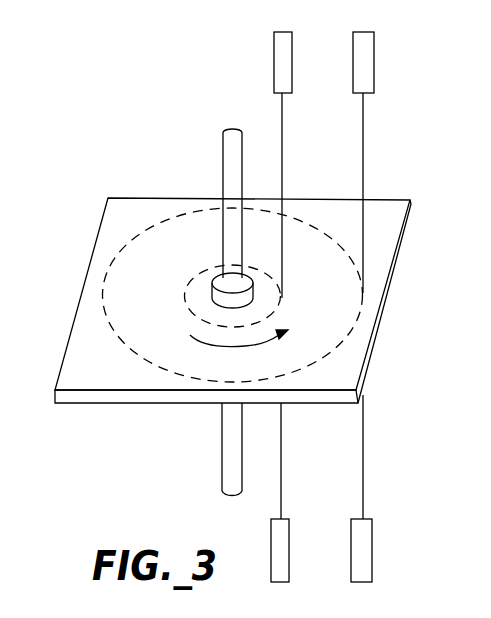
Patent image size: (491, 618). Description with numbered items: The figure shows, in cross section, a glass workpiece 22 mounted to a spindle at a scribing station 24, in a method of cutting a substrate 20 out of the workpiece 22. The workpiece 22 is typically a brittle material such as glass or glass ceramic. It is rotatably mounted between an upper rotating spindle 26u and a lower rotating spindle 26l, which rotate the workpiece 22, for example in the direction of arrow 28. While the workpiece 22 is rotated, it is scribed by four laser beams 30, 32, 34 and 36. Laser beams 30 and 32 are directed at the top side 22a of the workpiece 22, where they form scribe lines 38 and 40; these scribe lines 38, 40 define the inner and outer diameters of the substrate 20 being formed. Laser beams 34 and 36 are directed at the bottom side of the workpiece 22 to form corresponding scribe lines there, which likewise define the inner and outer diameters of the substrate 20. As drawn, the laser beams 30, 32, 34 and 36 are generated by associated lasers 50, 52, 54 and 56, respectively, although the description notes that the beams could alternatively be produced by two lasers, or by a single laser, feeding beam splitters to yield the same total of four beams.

The substrate 20 is at (142, 310).
The workpiece 22 is at (397, 222).
The top side 22a is at (365, 337).
The scribing station 24 is at (157, 68).
The upper rotating spindle 26u is at (223, 165).
The lower rotating spindle 26l is at (222, 460).
The arrow 28 is at (212, 344).
The laser beam 30 is at (282, 125).
The laser beam 32 is at (363, 155).
The laser beam 34 is at (281, 470).
The laser beam 36 is at (363, 470).
The scribe line 38 is at (192, 278).
The scribe line 40 is at (177, 212).
The laser 50 is at (274, 67).
The laser 52 is at (374, 48).
The laser 54 is at (289, 567).
The laser 56 is at (372, 545).